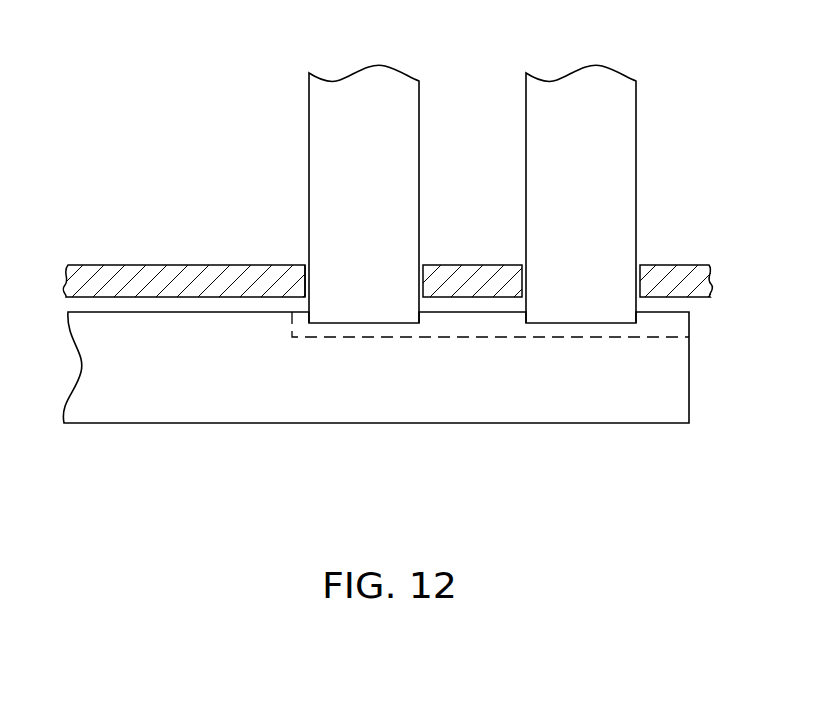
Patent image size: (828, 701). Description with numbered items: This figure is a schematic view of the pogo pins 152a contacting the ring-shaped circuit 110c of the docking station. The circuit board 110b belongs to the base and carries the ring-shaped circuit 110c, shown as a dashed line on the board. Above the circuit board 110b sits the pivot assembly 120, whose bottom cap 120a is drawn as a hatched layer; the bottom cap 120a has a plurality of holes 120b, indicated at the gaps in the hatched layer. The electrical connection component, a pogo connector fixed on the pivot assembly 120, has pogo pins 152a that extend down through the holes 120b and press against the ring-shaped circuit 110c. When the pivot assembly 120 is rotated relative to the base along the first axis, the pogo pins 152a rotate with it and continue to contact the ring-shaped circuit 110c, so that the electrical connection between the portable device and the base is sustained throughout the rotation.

The circuit board 110b is at (645, 412).
The ring-shaped circuit 110c is at (488, 335).
The pogo pins 152a is at (408, 130).
The pivot assembly 120 is at (395, 214).
The bottom cap 120a is at (183, 277).
The holes 120b is at (322, 282).